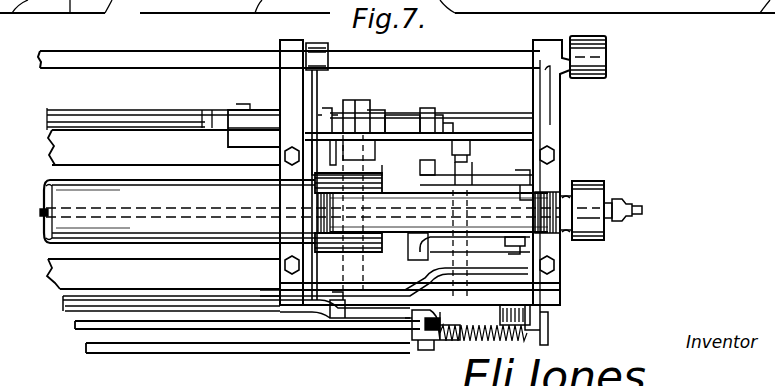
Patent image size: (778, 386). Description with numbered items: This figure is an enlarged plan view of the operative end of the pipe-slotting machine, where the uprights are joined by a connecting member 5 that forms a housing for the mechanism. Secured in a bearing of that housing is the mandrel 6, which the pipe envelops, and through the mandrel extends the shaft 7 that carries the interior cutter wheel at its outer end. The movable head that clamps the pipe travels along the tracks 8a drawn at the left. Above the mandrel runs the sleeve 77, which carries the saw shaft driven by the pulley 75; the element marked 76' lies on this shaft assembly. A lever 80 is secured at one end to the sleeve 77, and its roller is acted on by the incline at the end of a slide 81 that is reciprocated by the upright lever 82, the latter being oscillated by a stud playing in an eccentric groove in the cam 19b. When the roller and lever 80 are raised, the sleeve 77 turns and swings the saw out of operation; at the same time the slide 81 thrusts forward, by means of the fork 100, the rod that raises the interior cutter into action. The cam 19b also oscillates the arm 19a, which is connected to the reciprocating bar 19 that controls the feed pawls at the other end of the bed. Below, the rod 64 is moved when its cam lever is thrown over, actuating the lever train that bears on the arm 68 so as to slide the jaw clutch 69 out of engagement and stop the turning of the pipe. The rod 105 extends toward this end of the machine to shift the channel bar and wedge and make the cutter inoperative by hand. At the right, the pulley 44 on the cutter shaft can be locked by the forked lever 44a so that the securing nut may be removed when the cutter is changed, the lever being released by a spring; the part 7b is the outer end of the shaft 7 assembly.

The sleeve 77 is at (207, 54).
The pulley 75 is at (606, 60).
The rod 76' is at (431, 90).
The jaw clutch 69 is at (348, 110).
The arm 68 is at (310, 142).
The tracks 8a is at (48, 145).
The mandrel 6 is at (52, 182).
The shaft 7 is at (44, 214).
The connecting member 5 is at (552, 193).
The pulley 44 is at (604, 188).
The lever 44a is at (622, 225).
The shaft end 7b is at (640, 207).
The lever 80 is at (320, 248).
The slide 81 is at (405, 240).
The fork 100 is at (434, 242).
The upright lever 82 is at (525, 248).
The rod 105 is at (380, 308).
The arm 19a is at (410, 335).
The cam 19b is at (548, 330).
The reciprocating bar 19 is at (248, 354).
The rod 64 is at (160, 330).